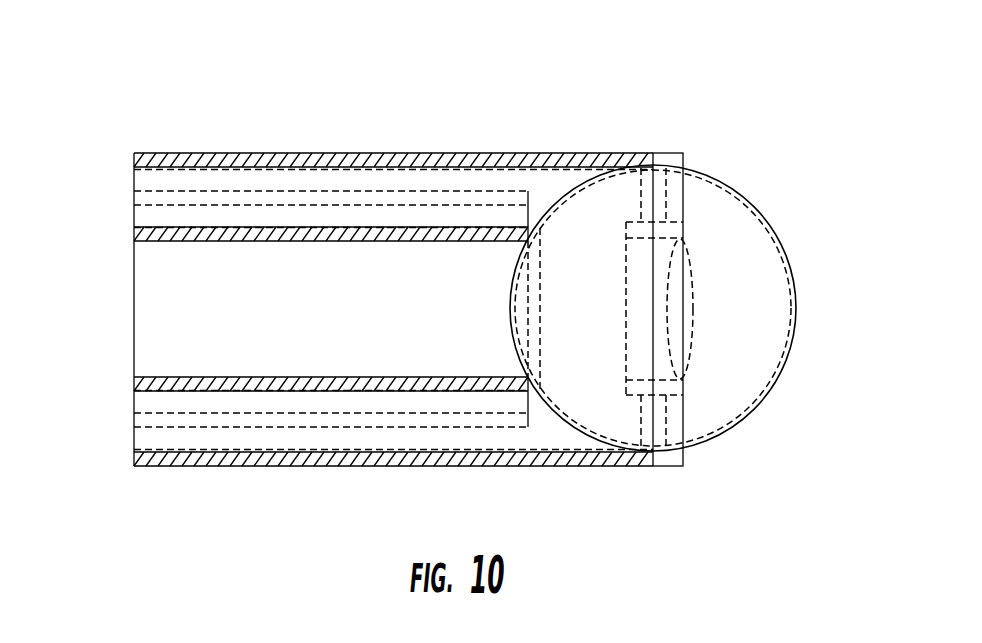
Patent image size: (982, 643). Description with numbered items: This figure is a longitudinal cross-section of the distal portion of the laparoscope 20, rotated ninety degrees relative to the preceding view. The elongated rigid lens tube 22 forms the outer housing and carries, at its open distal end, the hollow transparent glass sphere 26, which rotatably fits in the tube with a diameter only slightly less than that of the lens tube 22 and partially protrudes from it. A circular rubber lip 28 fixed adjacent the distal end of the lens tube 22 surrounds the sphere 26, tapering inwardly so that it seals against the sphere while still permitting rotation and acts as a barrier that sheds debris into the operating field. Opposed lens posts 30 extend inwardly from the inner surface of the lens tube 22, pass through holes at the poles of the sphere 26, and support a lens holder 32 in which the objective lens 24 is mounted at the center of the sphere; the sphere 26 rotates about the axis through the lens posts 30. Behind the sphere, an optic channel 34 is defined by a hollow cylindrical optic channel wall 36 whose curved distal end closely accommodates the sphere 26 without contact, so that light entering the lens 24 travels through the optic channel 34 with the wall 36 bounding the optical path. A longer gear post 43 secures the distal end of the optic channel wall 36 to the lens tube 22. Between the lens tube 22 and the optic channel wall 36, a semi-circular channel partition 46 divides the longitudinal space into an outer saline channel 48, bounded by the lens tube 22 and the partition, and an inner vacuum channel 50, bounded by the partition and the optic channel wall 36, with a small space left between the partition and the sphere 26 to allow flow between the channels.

The laparoscope 20 is at (540, 108).
The lens tube 22 is at (215, 158).
The objective lens 24 is at (694, 302).
The glass sphere 26 is at (790, 350).
The rubber lip 28 is at (668, 157).
The lens posts 30 is at (646, 202).
The lens holder 32 is at (668, 226).
The optic channel 34 is at (176, 238).
The optic channel wall 36 is at (138, 228).
The gear post 43 is at (522, 418).
The channel partition 46 is at (141, 197).
The saline channel 48 is at (367, 180).
The vacuum channel 50 is at (358, 216).